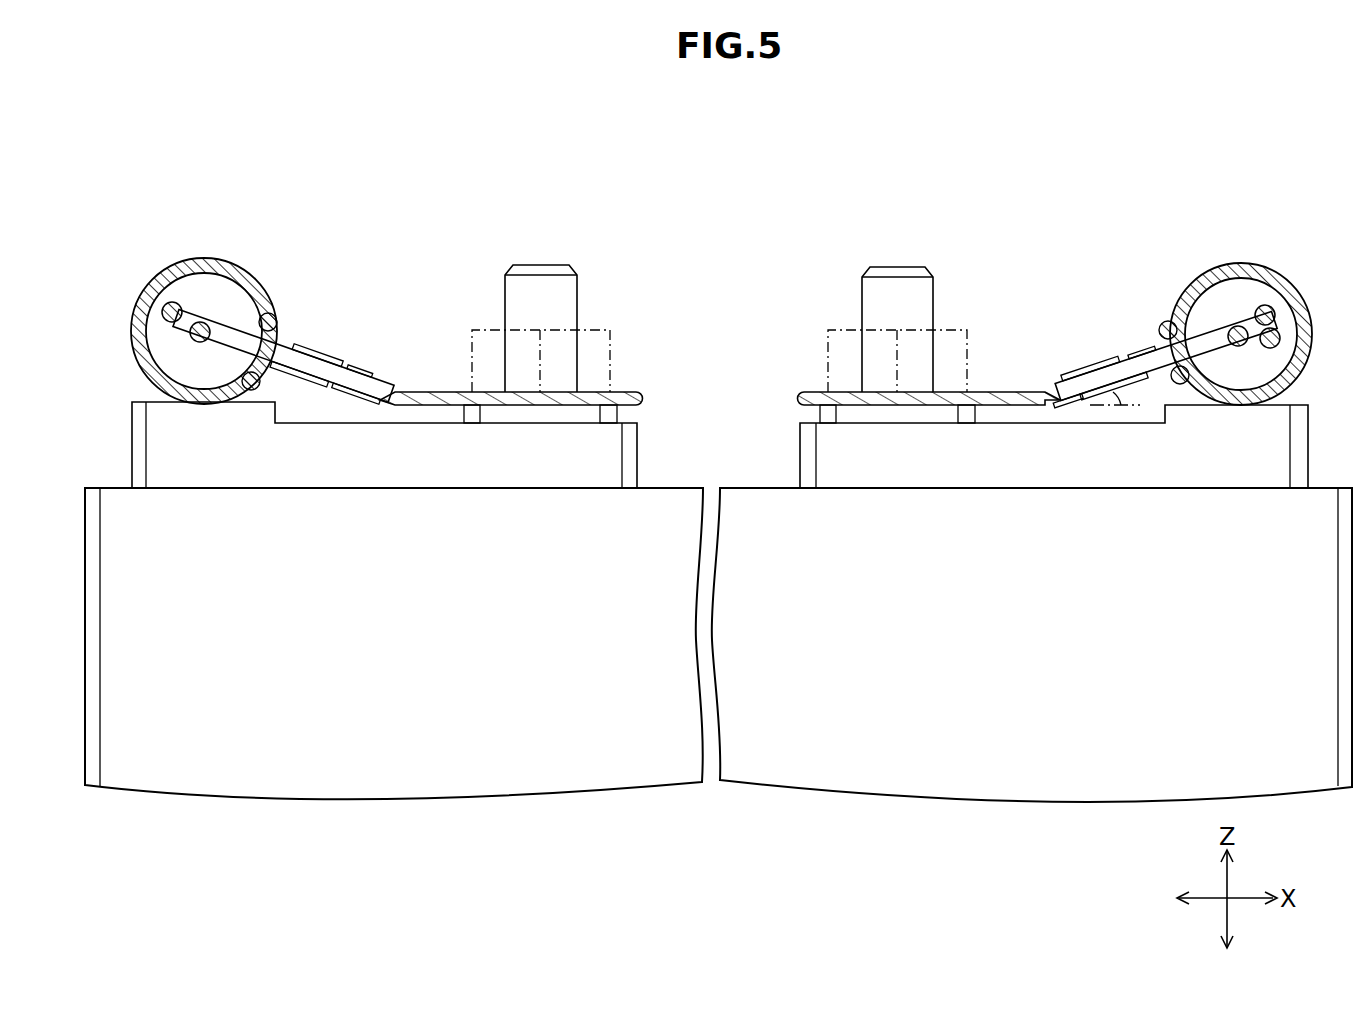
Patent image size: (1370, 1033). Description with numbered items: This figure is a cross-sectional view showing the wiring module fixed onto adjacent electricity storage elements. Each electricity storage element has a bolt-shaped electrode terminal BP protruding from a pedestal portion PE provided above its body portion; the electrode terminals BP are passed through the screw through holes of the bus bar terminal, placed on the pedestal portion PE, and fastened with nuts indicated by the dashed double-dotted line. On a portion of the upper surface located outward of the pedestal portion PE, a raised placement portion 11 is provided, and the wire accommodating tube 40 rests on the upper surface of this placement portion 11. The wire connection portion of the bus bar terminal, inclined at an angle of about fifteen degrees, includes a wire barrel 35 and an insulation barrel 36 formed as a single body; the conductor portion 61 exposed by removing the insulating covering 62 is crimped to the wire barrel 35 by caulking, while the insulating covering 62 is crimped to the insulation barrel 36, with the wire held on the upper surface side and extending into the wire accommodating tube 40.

The wire accommodating tube 40 is at (1218, 262).
The placement portion 11 is at (1282, 400).
The wire barrel 35 is at (1065, 372).
The insulation barrel 36 is at (1128, 350).
The conductor portion 61 is at (1045, 378).
The insulating covering 62 is at (1100, 366).
The electrode terminal BP is at (933, 297).
The pedestal portion PE is at (862, 415).